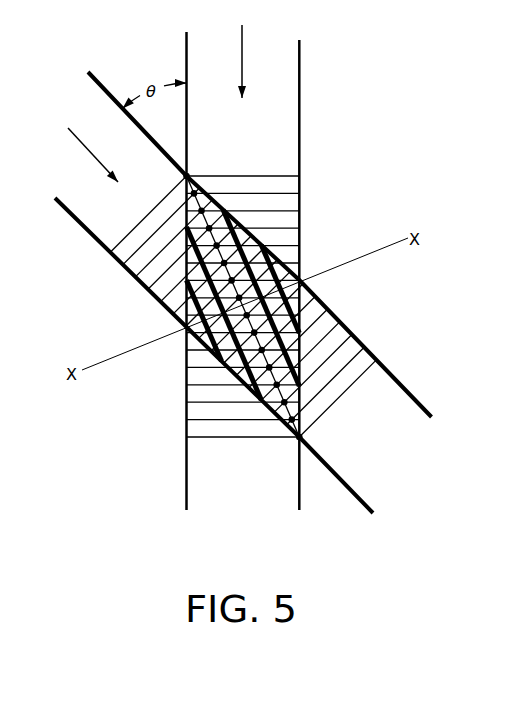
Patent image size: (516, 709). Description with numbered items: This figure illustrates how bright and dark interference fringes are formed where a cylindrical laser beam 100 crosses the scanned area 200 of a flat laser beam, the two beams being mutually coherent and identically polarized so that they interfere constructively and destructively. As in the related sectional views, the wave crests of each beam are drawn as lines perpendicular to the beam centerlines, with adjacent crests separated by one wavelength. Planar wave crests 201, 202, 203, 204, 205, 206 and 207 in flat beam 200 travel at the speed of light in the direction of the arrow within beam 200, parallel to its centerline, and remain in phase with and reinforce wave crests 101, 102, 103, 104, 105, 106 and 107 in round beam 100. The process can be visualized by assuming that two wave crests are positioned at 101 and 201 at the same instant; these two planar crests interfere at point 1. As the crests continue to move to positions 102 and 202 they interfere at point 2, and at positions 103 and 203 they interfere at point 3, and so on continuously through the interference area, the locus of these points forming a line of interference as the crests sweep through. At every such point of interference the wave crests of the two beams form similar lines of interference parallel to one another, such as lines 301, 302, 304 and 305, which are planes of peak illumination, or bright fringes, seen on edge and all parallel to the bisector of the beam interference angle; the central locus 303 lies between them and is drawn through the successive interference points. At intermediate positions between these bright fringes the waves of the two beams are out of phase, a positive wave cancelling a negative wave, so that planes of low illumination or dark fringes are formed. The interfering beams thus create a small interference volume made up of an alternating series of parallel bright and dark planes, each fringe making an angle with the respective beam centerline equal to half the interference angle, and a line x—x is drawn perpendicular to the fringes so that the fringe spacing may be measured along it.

The cylindrical laser beam 100 is at (102, 86).
The scanned area of flat laser beam 200 is at (300, 70).
The wave crest in round beam 101 is at (110, 252).
The wave crest in round beam 102 is at (123, 265).
The wave crest in round beam 103 is at (135, 277).
The wave crest in round beam 104 is at (148, 289).
The wave crest in round beam 105 is at (161, 302).
The wave crest in round beam 106 is at (173, 314).
The wave crest in round beam 107 is at (186, 326).
The planar wave crest in flat beam 201 is at (299, 176).
The planar wave crest in flat beam 202 is at (299, 193).
The planar wave crest in flat beam 203 is at (299, 211).
The planar wave crest in flat beam 204 is at (299, 228).
The planar wave crest in flat beam 205 is at (299, 246).
The planar wave crest in flat beam 206 is at (299, 263).
The planar wave crest in flat beam 207 is at (299, 280).
The line of interference 301 is at (218, 364).
The line of interference 302 is at (258, 405).
The central locus line of mark coincidence 303 is at (285, 417).
The line of interference 304 is at (303, 385).
The line of interference 305 is at (303, 332).
The point of interference 1 is at (183, 176).
The point of interference 2 is at (191, 193).
The point of interference 3 is at (198, 211).